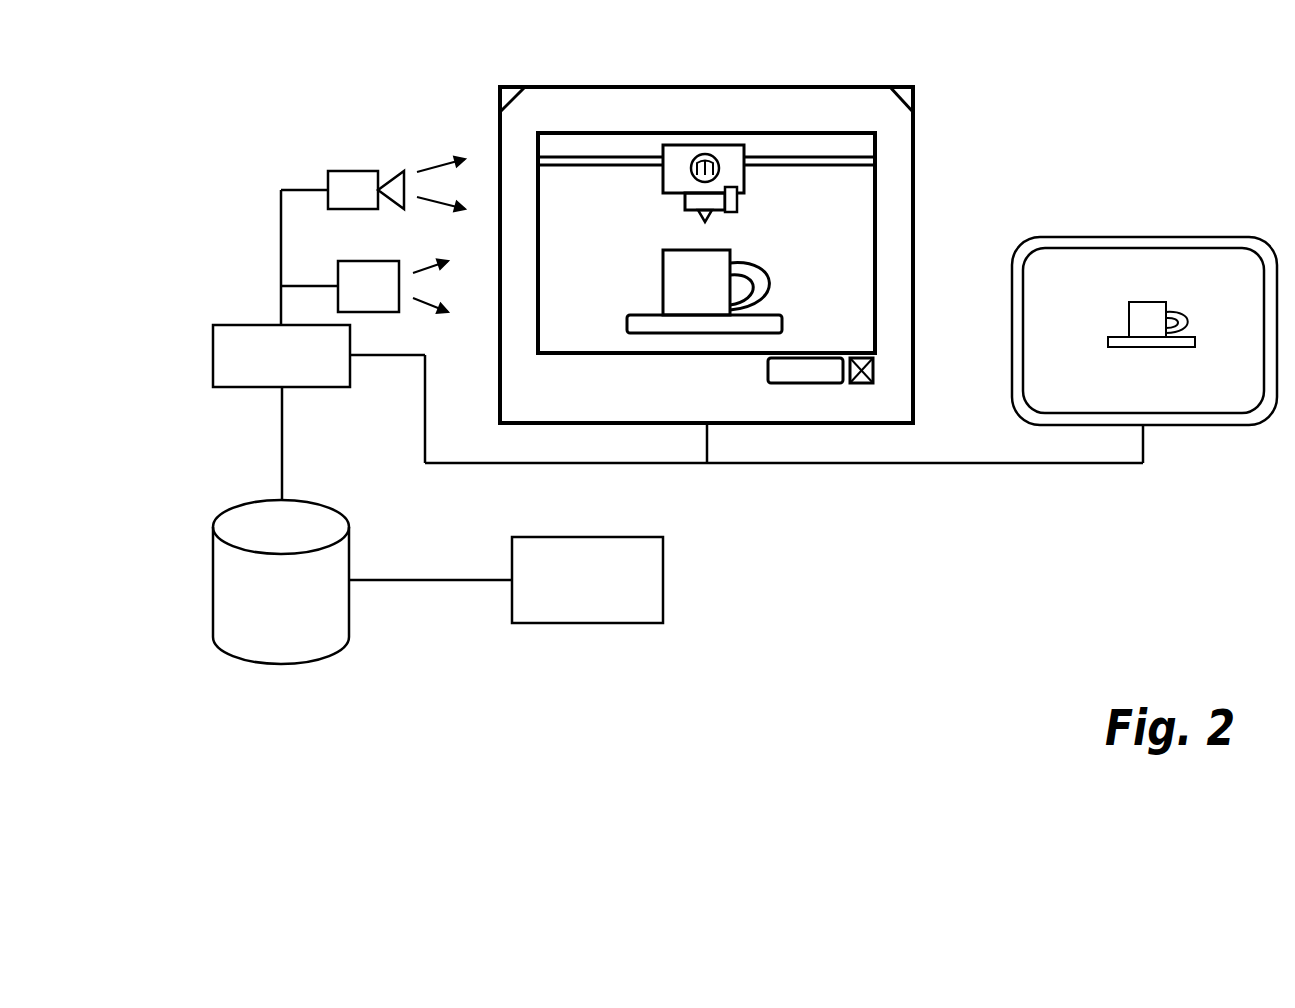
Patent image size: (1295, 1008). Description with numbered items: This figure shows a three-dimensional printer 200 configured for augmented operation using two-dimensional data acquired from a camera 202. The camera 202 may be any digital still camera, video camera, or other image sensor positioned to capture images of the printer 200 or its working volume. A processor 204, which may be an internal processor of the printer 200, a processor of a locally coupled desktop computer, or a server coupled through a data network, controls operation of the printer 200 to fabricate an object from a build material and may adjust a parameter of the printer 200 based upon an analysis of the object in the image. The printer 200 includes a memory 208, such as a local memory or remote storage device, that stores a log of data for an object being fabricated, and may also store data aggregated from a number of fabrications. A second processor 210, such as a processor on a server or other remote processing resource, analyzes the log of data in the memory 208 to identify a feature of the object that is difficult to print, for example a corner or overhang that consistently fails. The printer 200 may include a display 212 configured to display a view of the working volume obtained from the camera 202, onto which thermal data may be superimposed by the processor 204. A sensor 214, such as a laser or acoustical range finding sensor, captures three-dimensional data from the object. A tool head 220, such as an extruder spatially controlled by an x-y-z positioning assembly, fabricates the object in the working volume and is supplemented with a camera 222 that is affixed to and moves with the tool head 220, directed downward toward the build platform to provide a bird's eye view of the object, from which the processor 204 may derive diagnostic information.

The printer 200 is at (915, 203).
The camera 202 is at (352, 170).
The processor 204 is at (212, 368).
The memory 208 is at (212, 563).
The second processor 210 is at (595, 625).
The display 212 is at (1134, 235).
The sensor 214 is at (380, 260).
The tool head 220 is at (673, 195).
The camera 222 is at (740, 210).